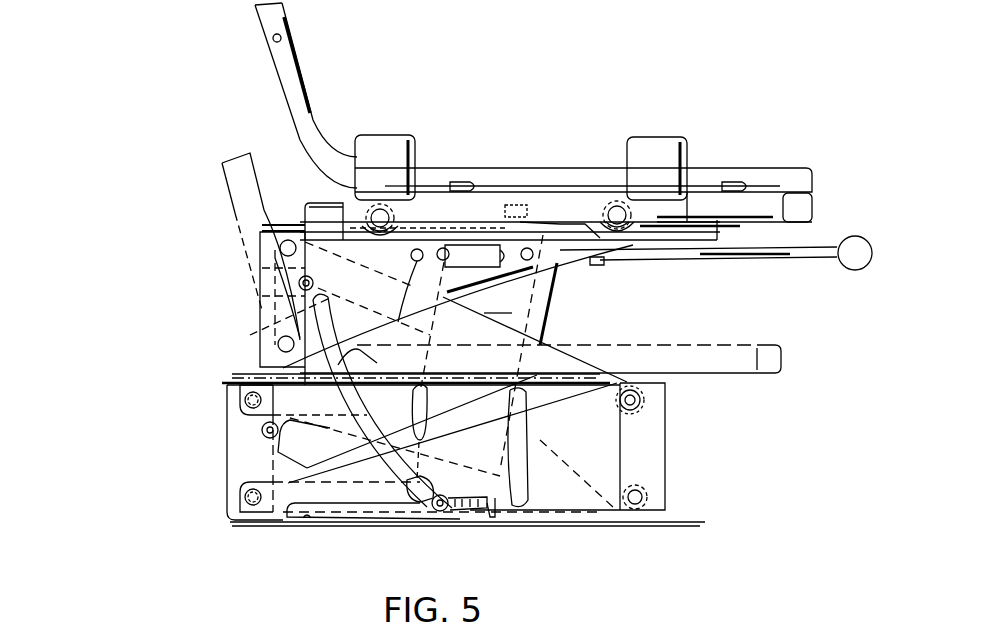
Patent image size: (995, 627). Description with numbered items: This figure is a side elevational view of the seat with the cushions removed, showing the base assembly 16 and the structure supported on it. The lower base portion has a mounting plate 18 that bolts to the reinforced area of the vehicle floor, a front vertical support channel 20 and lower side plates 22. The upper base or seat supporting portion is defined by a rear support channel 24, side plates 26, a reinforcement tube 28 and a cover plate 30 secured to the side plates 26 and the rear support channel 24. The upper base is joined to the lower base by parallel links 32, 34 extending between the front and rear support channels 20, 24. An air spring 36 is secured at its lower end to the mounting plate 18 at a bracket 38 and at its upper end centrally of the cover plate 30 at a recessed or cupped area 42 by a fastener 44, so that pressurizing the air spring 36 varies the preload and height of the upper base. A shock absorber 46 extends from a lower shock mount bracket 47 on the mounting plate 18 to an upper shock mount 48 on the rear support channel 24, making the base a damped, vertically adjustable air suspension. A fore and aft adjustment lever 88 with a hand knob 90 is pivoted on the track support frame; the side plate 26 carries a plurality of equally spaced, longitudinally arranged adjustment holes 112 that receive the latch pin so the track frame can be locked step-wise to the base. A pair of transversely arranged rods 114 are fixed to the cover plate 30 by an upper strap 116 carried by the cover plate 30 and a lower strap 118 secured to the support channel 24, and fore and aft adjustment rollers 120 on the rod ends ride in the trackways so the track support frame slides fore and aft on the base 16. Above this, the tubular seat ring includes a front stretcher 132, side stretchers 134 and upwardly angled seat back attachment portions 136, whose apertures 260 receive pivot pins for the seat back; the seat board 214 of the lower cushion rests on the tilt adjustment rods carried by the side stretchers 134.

The base assembly 16 is at (118, 320).
The mounting plate 18 is at (640, 522).
The front vertical support channel 20 is at (648, 438).
The lower side plates 22 is at (543, 493).
The rear support channel 24 is at (262, 302).
The side plates 26 is at (354, 285).
The reinforcement tube 28 is at (273, 213).
The cover plate 30 is at (607, 260).
The parallel link 32 is at (497, 337).
The parallel link 34 is at (537, 380).
The air spring 36 is at (511, 301).
The bracket 38 is at (497, 527).
The recessed or cupped area 42 is at (543, 235).
The fastener 44 is at (515, 205).
The shock absorber 46 is at (232, 385).
The bracket 47 is at (443, 512).
The upper shock mount 48 is at (250, 335).
The fore and aft adjustment lever 88 is at (805, 258).
The hand knob 90 is at (866, 247).
The adjustment holes 112 is at (440, 260).
The rods 114 is at (390, 187).
The upper strap 116 is at (275, 212).
The lower strap 118 is at (273, 238).
The fore and aft adjustment rollers 120 is at (618, 206).
The front stretcher 132 is at (807, 207).
The side stretchers 134 is at (693, 197).
The seat back attachment portions 136 is at (285, 75).
The seat board 214 is at (757, 168).
The apertures 260 is at (283, 36).